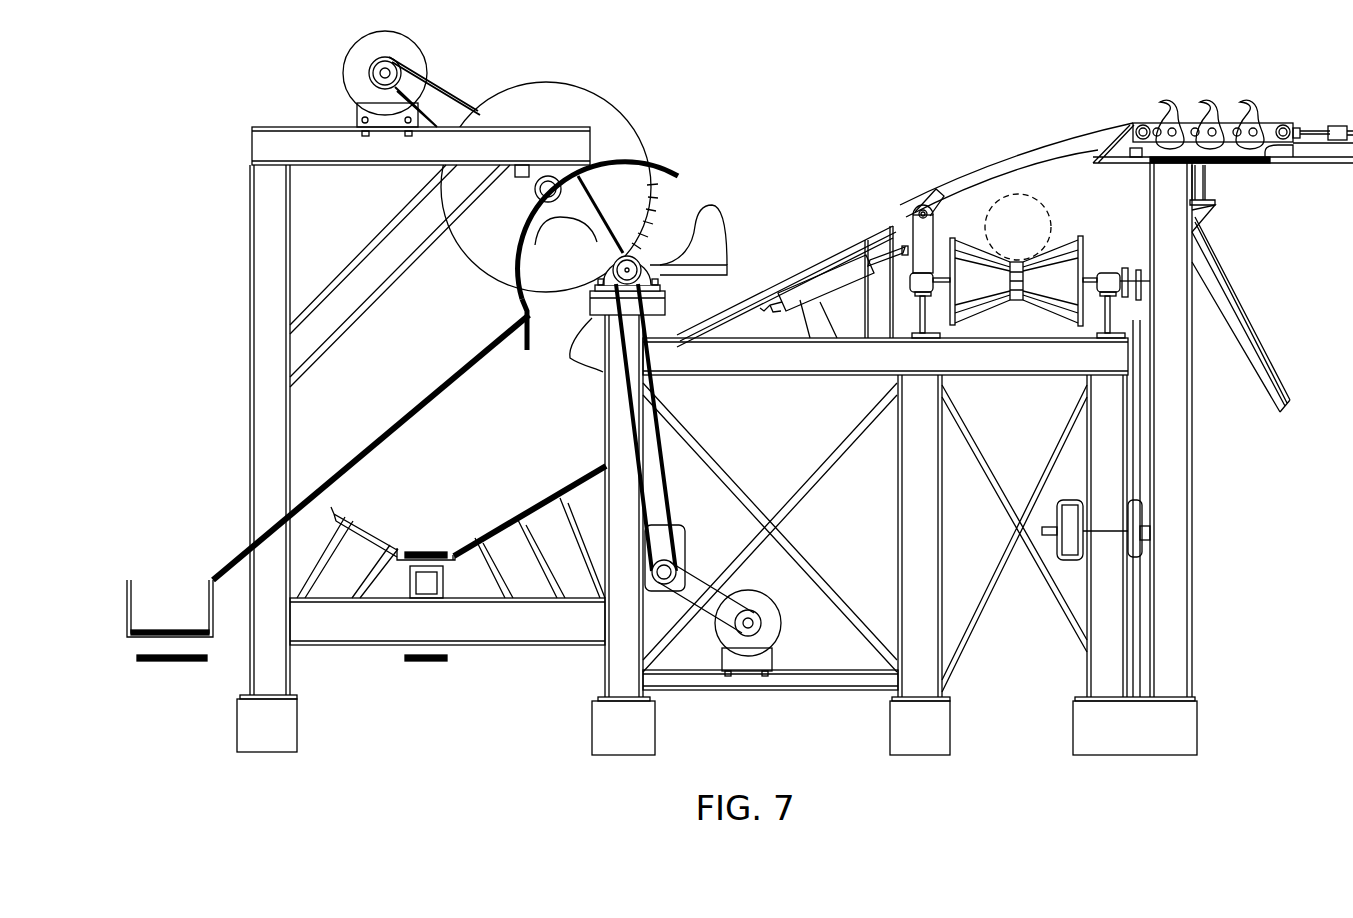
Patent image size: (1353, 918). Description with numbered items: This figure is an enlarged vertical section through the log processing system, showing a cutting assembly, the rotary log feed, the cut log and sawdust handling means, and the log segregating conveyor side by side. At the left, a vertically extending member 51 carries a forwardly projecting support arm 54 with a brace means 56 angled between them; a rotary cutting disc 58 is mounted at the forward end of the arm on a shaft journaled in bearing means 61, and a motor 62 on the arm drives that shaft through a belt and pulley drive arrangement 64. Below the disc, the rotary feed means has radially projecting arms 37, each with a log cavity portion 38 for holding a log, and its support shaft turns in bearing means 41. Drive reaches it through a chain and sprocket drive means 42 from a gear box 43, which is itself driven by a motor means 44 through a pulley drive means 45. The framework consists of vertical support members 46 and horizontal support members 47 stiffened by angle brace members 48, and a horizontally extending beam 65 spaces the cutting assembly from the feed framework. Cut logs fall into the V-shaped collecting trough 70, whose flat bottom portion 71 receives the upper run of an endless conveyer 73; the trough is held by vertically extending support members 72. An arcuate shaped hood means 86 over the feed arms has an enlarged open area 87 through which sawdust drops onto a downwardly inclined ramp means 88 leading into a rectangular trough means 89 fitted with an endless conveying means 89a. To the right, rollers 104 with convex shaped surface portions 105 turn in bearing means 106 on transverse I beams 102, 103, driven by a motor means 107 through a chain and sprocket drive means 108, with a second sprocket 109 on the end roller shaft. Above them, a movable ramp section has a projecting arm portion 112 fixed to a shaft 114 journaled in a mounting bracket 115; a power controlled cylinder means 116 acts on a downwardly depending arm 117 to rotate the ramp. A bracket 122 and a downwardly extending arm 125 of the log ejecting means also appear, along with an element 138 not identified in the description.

The radially projecting arm 37 is at (728, 262).
The log cavity portion 38 is at (581, 226).
The bearing means 41 is at (661, 287).
The chain and sprocket drive means 42 is at (655, 384).
The gear box 43 is at (686, 541).
The motor means 44 is at (780, 631).
The pulley drive means 45 is at (694, 577).
The vertically oriented support member 46 is at (605, 679).
The horizontally oriented support member 47 is at (760, 366).
The angle brace member 48 is at (831, 484).
The vertically extending member 51 is at (250, 378).
The support arm 54 is at (307, 128).
The brace means 56 is at (398, 230).
The rotary cutting disc 58 is at (620, 112).
The bearing means 61 is at (536, 186).
The motor 62 is at (423, 61).
The belt and pulley drive arrangement 64 is at (447, 97).
The horizontally extending beam 65 is at (525, 645).
The V-shaped collecting trough 70 is at (537, 503).
The flat bottom portion 71 is at (404, 563).
The vertically extending support member 72 is at (325, 565).
The endless conveyer 73 is at (442, 548).
The arcuate shaped hood means 86 is at (669, 175).
The enlarged open area 87 is at (520, 297).
The downwardly inclined ramp means 88 is at (406, 413).
The rectangular shaped trough means 89 is at (126, 608).
The endless type conveying means 89a is at (150, 629).
The transverse I beam 102 is at (935, 338).
The transverse I beam 103 is at (1095, 338).
The roller 104 is at (1081, 238).
The convex shaped surface portion 105 is at (1023, 301).
The bearing means 106 is at (910, 290).
The motor means 107 is at (1080, 563).
The chain and sprocket drive means 108 is at (1141, 276).
The second sprocket 109 is at (1125, 268).
The projecting arm portion 112 is at (1012, 156).
The shaft 114 is at (932, 204).
The mounting bracket 115 is at (935, 233).
The power controlled cylinder means 116 is at (837, 273).
The downwardly depending arm 117 is at (896, 234).
The bracket 122 is at (1266, 122).
The downwardly extending arm 125 is at (1215, 102).
The rod 138 is at (1338, 128).